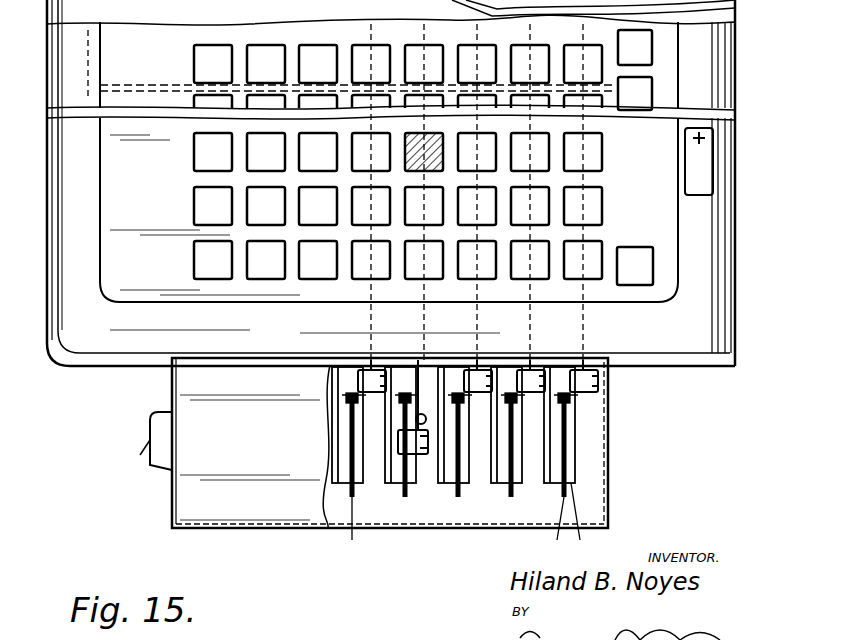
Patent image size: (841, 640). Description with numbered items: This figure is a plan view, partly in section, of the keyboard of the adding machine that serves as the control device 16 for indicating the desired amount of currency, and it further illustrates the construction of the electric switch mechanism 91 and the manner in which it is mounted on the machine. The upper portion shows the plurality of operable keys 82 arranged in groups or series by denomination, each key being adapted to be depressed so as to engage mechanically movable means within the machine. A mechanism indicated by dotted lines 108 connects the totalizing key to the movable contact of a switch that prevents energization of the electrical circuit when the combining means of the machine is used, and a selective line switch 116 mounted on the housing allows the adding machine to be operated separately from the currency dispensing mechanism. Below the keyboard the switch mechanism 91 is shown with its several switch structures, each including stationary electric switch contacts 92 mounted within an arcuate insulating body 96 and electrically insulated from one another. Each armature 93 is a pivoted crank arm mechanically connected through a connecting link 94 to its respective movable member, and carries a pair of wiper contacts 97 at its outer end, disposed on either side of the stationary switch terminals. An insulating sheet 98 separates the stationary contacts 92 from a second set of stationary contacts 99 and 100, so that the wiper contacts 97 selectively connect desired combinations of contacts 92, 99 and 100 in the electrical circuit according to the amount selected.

The control device 16 is at (95, 376).
The operable keys 82 is at (356, 50).
The switch mechanism 91 is at (437, 502).
The stationary electric switch contacts 92 is at (352, 440).
The armature 93 is at (372, 370).
The connecting link 94 is at (372, 356).
The arcuate insulating body 96 is at (585, 519).
The wiper contacts 97 is at (352, 398).
The insulating sheet 98 is at (450, 526).
The stationary contacts 99 is at (356, 408).
The stationary contact 100 is at (576, 474).
The mechanism 108 is at (136, 86).
The selective line switch 116 is at (152, 456).